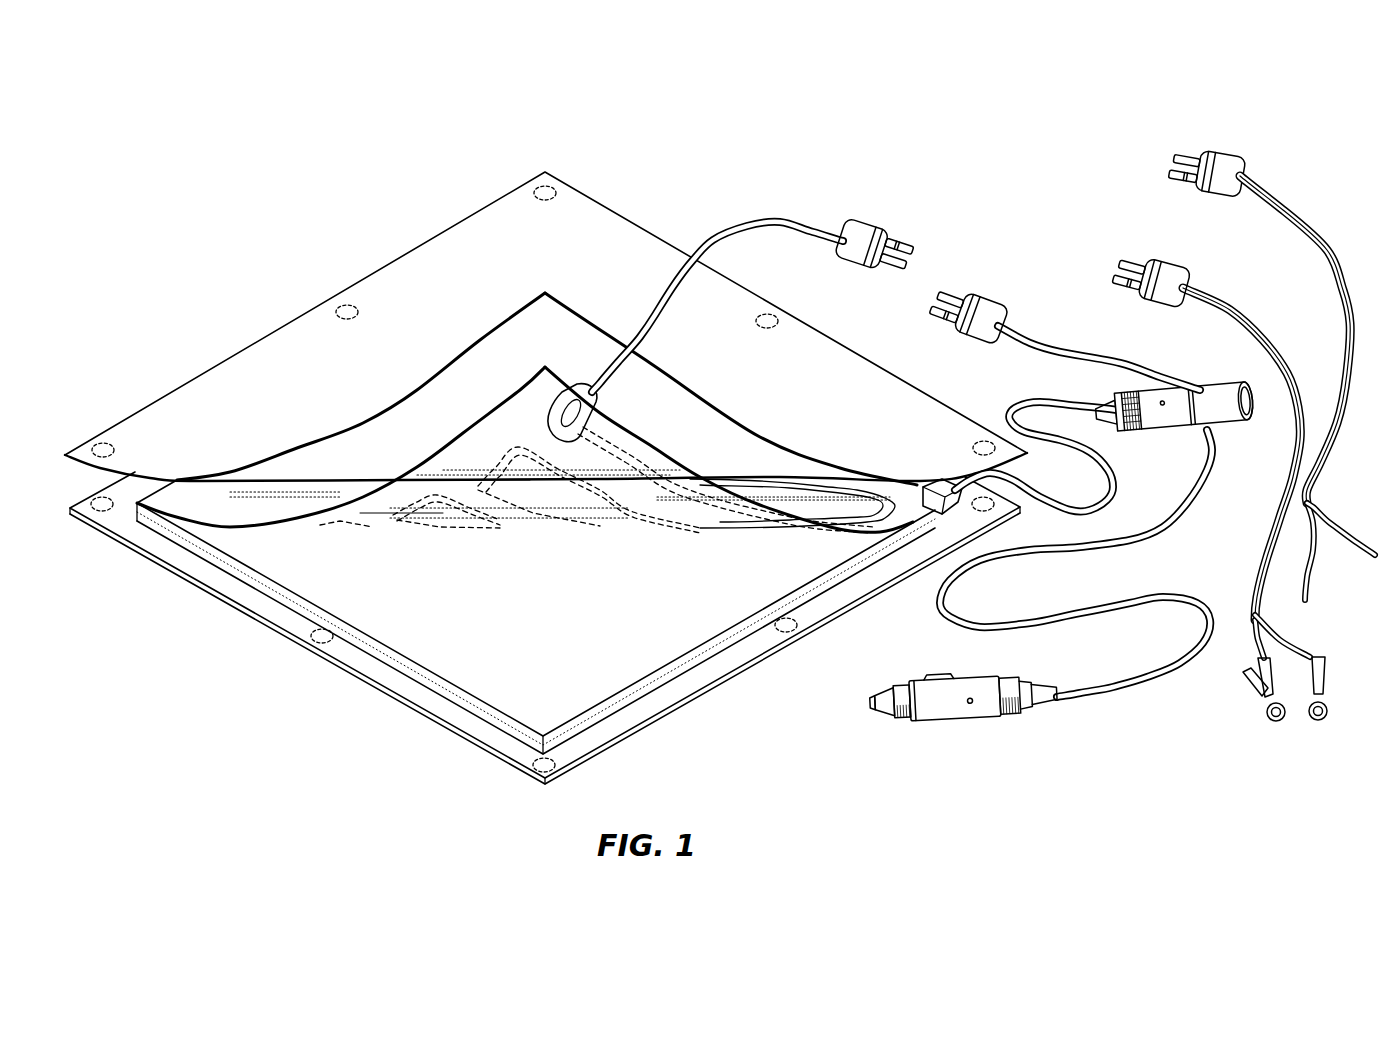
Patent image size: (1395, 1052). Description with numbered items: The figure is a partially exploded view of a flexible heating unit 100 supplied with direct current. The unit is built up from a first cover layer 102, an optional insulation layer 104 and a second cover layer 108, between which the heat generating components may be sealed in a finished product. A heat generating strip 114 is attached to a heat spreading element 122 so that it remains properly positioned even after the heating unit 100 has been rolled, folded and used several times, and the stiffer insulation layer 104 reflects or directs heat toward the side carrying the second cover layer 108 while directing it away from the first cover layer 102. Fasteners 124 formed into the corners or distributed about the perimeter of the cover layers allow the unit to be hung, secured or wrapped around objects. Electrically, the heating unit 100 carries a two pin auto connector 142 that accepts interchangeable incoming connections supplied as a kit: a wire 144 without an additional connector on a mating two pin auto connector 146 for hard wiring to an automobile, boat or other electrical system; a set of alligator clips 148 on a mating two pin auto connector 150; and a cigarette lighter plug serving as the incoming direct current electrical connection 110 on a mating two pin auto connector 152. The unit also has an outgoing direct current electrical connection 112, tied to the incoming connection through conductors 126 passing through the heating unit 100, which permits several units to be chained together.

The heating unit 100 is at (1004, 137).
The first cover layer 102 is at (622, 720).
The insulation layer 104 is at (565, 634).
The second cover layer 108 is at (830, 416).
The incoming direct current electrical connection 110 is at (988, 713).
The outgoing direct current electrical connection 112 is at (1216, 402).
The heat generating strip 114 is at (647, 457).
The heat spreading element 122 is at (530, 437).
The fasteners 124 is at (550, 190).
The conductors 126 is at (924, 512).
The two pin auto connector 142 is at (866, 225).
The wire 144 is at (1318, 236).
The mating two pin auto connector 146 is at (1227, 167).
The alligator clips 148 is at (1290, 637).
The mating two pin auto connector 150 is at (1172, 282).
The mating two pin auto connector 152 is at (989, 307).